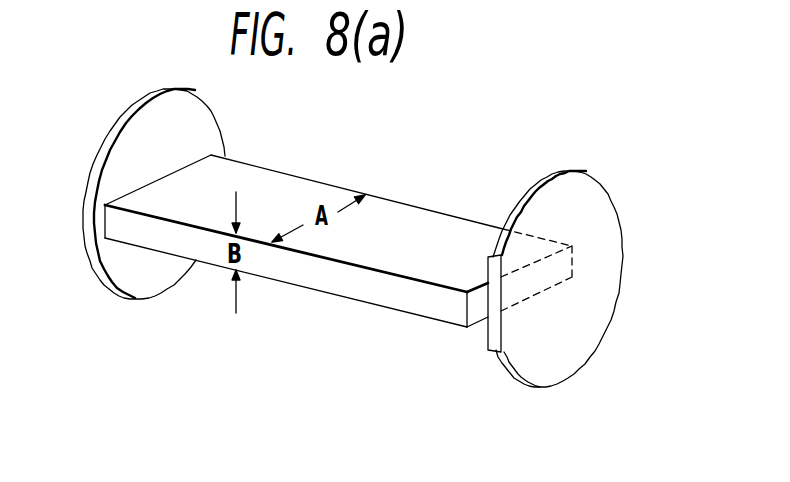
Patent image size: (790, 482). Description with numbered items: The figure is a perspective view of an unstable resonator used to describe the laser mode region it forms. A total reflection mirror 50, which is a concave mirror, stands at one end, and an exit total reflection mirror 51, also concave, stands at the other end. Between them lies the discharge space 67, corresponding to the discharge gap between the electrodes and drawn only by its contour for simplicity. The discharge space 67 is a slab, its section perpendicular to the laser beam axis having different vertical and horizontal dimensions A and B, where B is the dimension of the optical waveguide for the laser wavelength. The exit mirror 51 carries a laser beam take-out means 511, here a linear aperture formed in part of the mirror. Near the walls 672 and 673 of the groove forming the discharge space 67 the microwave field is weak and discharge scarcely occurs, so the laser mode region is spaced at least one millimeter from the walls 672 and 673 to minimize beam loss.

The total reflection mirror 50 is at (197, 123).
The exit total reflection mirror 51 is at (603, 215).
The discharge space 67 is at (338, 231).
The wall of the groove 673 is at (310, 180).
The wall of the groove 672 is at (307, 291).
The laser beam take-out means 511 is at (487, 338).